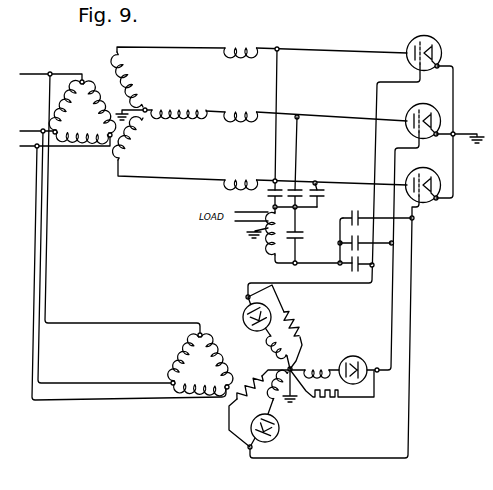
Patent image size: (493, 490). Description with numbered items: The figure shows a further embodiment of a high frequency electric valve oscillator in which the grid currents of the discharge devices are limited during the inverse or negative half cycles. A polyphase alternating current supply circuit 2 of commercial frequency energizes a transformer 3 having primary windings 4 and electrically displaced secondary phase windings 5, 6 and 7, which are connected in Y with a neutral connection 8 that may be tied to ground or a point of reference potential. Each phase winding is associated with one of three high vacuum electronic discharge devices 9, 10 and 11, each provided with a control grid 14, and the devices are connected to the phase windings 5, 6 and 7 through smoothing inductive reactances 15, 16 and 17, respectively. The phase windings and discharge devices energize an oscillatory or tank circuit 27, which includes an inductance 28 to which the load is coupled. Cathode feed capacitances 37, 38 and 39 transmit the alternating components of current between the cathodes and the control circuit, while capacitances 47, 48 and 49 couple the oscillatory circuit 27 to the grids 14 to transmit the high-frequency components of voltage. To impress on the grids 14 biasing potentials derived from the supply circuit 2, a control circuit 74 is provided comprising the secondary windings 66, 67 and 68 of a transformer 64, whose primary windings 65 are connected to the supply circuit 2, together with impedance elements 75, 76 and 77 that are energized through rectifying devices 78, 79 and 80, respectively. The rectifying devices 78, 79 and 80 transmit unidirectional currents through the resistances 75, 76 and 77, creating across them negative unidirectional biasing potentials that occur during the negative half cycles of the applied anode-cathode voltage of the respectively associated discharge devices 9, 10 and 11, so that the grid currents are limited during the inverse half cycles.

The polyphase alternating current supply circuit 2 is at (21, 132).
The transformer 3 is at (135, 113).
The primary windings 4 is at (92, 114).
The secondary phase winding 5 is at (137, 81).
The secondary phase winding 6 is at (178, 104).
The secondary phase winding 7 is at (131, 147).
The neutral connection 8 is at (148, 114).
The electronic discharge device 9 is at (438, 44).
The electronic discharge device 10 is at (432, 106).
The electronic discharge device 11 is at (431, 170).
The control grid 14 is at (411, 46).
The smoothing inductive reactance 15 is at (238, 53).
The smoothing inductive reactance 16 is at (238, 120).
The smoothing inductive reactance 17 is at (238, 175).
The tank circuit 27 is at (323, 231).
The inductance 28 is at (265, 252).
The cathode feed capacitance 37 is at (266, 190).
The cathode feed capacitance 38 is at (300, 182).
The cathode feed capacitance 39 is at (320, 187).
The capacitance 47 is at (356, 274).
The capacitance 48 is at (349, 244).
The capacitance 49 is at (355, 212).
The transformer 64 is at (297, 368).
The primary windings 65 is at (213, 362).
The secondary winding 66 is at (267, 346).
The secondary winding 67 is at (316, 364).
The secondary winding 68 is at (280, 408).
The control circuit 74 is at (339, 320).
The impedance element 75 is at (300, 315).
The impedance element 76 is at (325, 401).
The impedance element 77 is at (251, 363).
The rectifying device 78 is at (243, 308).
The rectifying device 79 is at (354, 356).
The rectifying device 80 is at (279, 437).